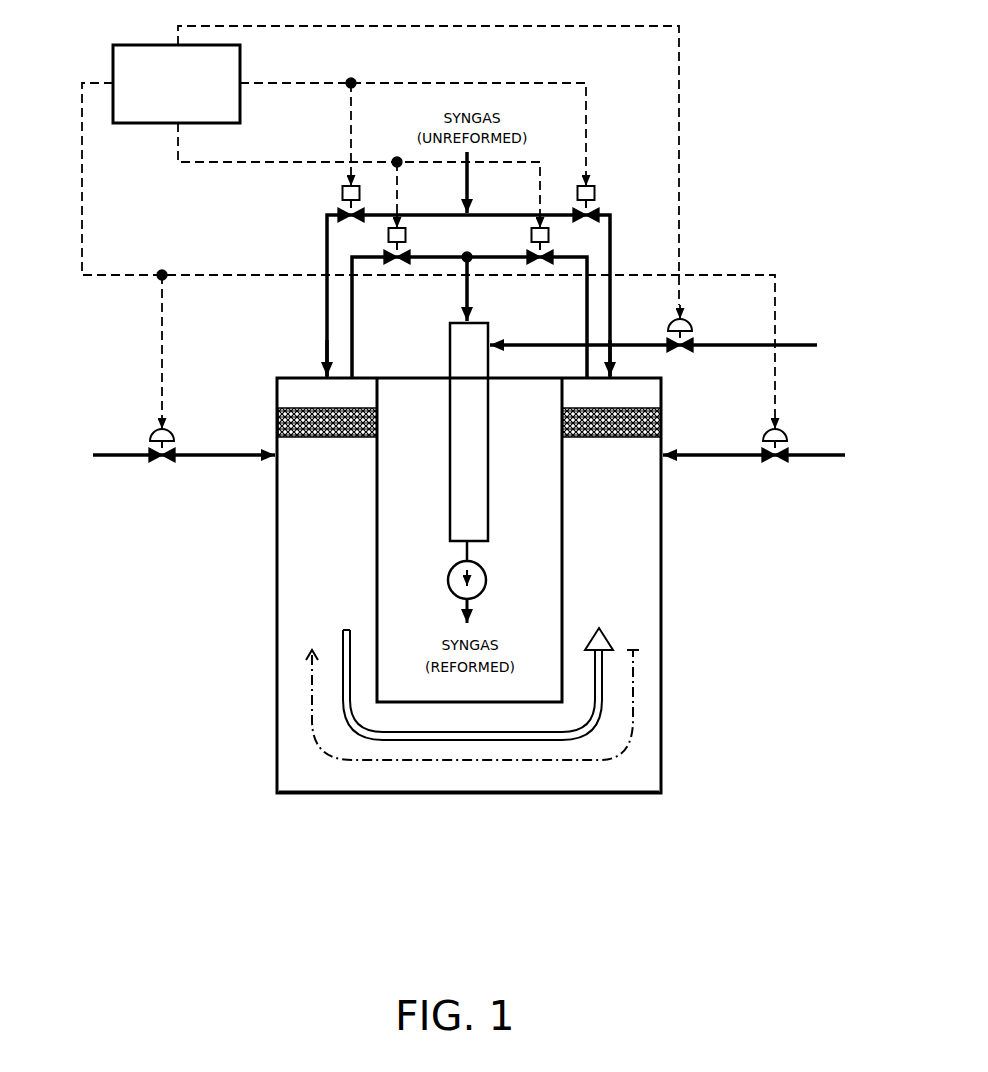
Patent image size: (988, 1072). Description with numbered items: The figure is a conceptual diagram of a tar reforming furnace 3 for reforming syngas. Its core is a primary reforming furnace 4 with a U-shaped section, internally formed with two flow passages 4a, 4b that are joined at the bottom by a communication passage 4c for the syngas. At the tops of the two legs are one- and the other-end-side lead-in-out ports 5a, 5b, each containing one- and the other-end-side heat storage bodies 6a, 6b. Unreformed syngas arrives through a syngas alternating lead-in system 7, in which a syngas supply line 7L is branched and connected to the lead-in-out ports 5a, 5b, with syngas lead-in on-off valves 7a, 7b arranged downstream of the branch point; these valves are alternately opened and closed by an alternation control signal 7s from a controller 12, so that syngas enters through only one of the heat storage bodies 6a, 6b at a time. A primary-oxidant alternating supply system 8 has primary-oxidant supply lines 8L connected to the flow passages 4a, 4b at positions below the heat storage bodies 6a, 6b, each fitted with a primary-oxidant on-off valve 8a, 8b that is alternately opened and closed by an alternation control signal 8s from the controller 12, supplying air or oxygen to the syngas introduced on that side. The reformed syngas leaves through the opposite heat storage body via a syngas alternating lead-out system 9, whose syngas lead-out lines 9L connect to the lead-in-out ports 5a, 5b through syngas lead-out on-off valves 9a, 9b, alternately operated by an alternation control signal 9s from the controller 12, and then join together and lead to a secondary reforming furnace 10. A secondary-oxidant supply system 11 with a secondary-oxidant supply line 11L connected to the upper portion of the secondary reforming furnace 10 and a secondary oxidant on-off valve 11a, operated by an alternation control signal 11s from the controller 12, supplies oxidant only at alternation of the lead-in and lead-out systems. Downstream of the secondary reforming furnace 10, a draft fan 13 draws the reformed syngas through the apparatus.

The tar reforming furnace 3 is at (411, 624).
The primary reforming furnace 4 is at (442, 624).
The flow passage 4a is at (325, 530).
The flow passage 4b is at (620, 525).
The communication passage 4c is at (440, 795).
The one-end-side lead-in-out port 5a is at (312, 396).
The other-end-side lead-in-out port 5b is at (625, 396).
The one-end-side heat storage body 6a is at (277, 424).
The other-end-side heat storage body 6b is at (661, 424).
The syngas alternating lead-in system 7 is at (532, 249).
The syngas supply line 7L is at (553, 212).
The syngas lead-in on-off valve 7a is at (340, 210).
The syngas lead-in on-off valve 7b is at (603, 210).
The alternation control signal 7s is at (330, 85).
The primary-oxidant alternating supply system 8 is at (470, 456).
The primary-oxidant supply line 8L is at (130, 458).
The primary-oxidant on-off valve 8a is at (157, 452).
The primary-oxidant on-off valve 8b is at (783, 451).
The alternation control signal 8s is at (82, 235).
The syngas alternating lead-out system 9 is at (517, 277).
The syngas lead-out line 9L is at (468, 292).
The syngas lead-out on-off valve 9a is at (388, 253).
The syngas lead-out on-off valve 9b is at (596, 244).
The alternation control signal 9s is at (235, 162).
The secondary reforming furnace 10 is at (448, 373).
The secondary-oxidant supply system 11 is at (698, 305).
The secondary-oxidant supply line 11L is at (790, 300).
The secondary oxidant on-off valve 11a is at (695, 342).
The alternation control signal 11s is at (680, 118).
The controller 12 is at (113, 67).
The draft fan 13 is at (491, 576).